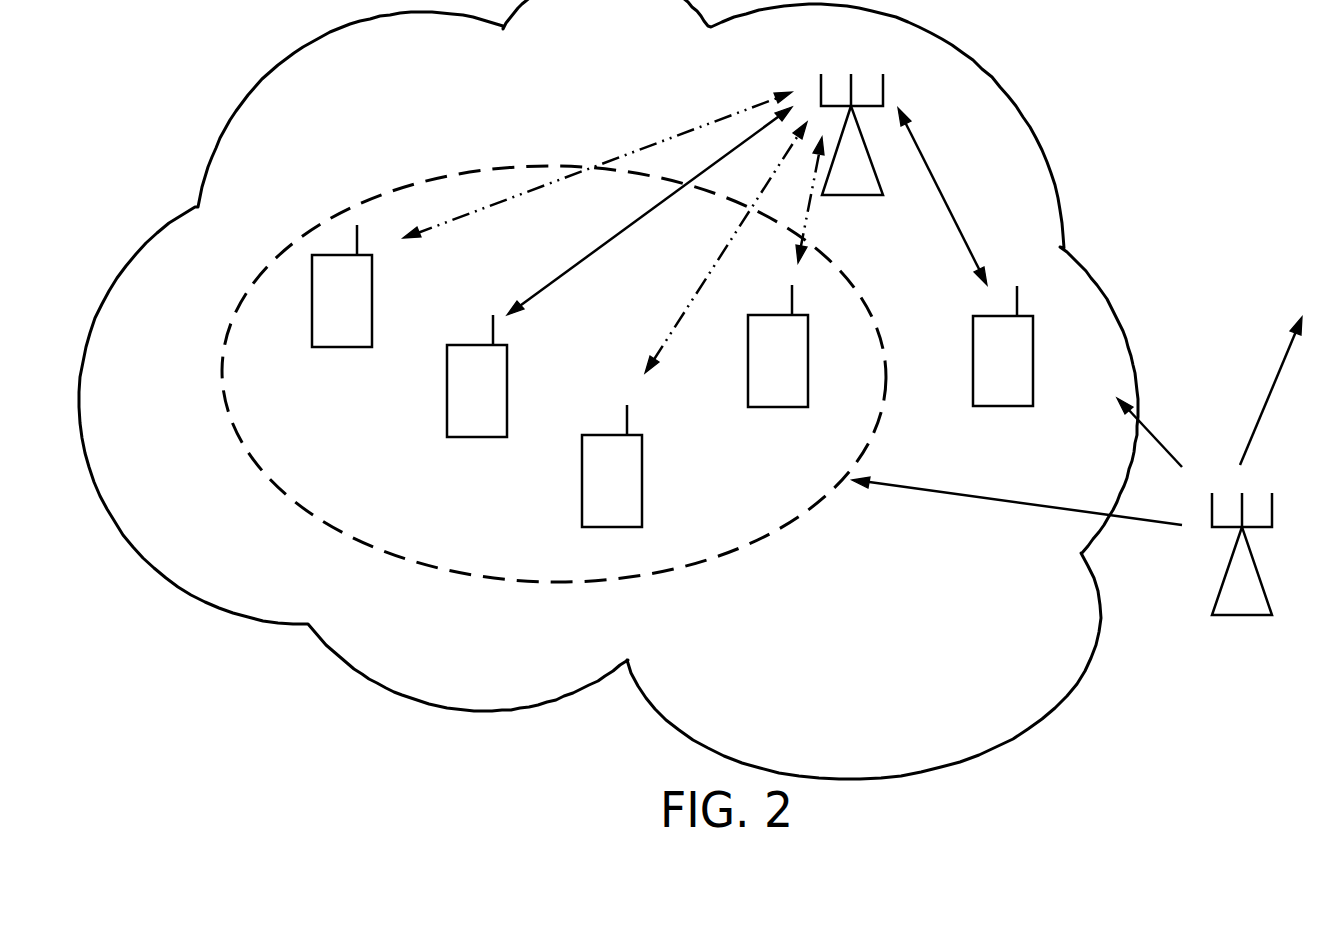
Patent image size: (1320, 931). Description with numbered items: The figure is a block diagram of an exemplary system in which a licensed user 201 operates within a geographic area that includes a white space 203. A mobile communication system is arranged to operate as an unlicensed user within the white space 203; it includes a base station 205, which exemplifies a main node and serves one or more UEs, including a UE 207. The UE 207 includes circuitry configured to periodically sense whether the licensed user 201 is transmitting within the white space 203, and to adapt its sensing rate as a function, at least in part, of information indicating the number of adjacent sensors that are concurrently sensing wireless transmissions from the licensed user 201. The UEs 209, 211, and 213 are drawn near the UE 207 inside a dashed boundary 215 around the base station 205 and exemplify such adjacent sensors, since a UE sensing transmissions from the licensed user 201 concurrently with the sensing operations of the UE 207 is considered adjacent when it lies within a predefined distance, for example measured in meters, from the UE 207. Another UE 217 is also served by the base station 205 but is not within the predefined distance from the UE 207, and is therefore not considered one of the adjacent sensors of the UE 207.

The licensed user 201 is at (1215, 605).
The white space 203 is at (1280, 178).
The base station 205 is at (868, 195).
The UE 207 is at (447, 400).
The UE 209 is at (372, 313).
The UE 211 is at (748, 395).
The UE 213 is at (582, 515).
The base station coverage area 215 is at (710, 560).
The UE 217 is at (973, 375).